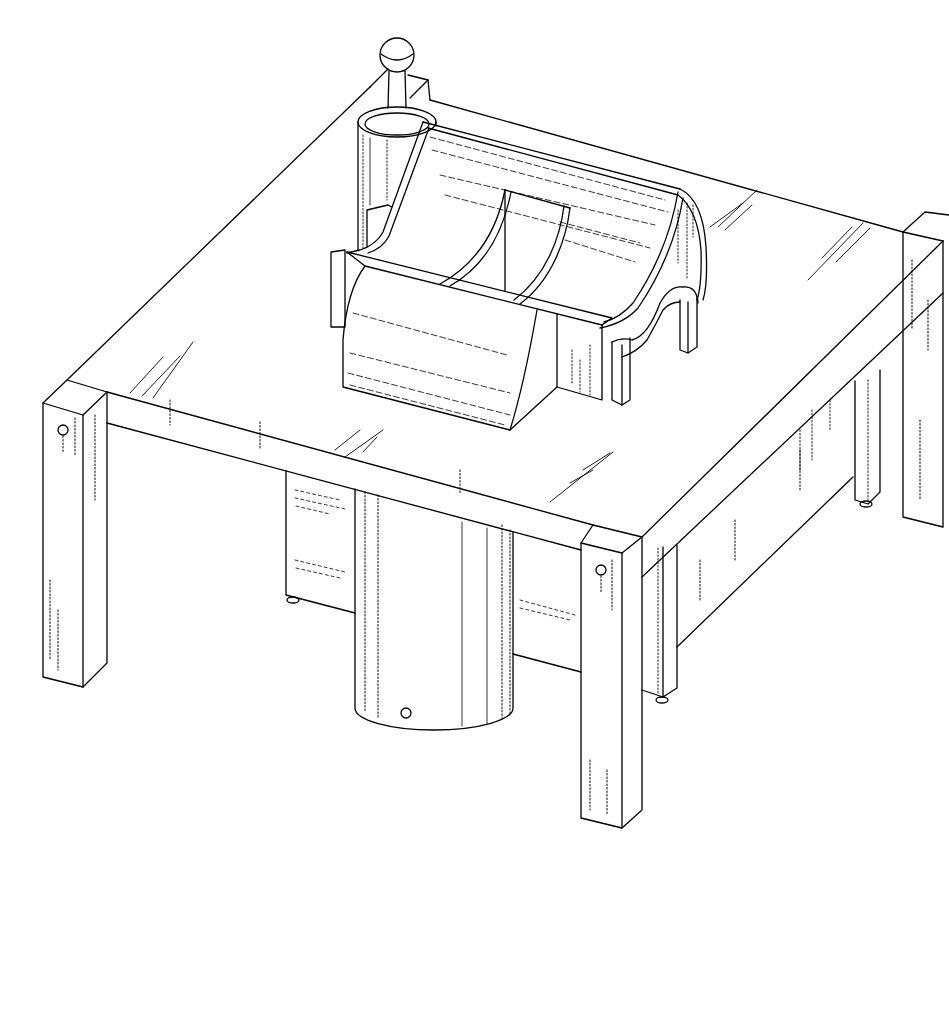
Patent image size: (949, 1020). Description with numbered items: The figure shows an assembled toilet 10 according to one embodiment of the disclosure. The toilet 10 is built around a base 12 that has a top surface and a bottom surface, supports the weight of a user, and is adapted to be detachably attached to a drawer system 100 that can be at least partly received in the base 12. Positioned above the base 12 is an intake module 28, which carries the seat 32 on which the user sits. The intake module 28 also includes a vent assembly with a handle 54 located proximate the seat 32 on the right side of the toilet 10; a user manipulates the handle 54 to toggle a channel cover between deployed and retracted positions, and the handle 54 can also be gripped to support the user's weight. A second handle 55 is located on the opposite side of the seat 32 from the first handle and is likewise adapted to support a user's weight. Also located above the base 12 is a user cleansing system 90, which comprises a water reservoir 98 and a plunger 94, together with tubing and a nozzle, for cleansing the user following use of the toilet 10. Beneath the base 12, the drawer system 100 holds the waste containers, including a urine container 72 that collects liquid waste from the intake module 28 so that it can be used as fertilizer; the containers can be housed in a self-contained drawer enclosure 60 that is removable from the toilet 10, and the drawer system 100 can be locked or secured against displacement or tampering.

The toilet 10 is at (740, 135).
The base 12 is at (203, 260).
The intake module 28 is at (326, 352).
The seat 32 is at (553, 160).
The handle 54 is at (333, 293).
The second handle 55 is at (696, 327).
The self-contained drawer enclosure 60 is at (673, 673).
The urine container 72 is at (356, 666).
The user cleansing system 90 is at (338, 134).
The plunger 94 is at (391, 76).
The water reservoir 98 is at (357, 187).
The drawer system 100 is at (824, 552).